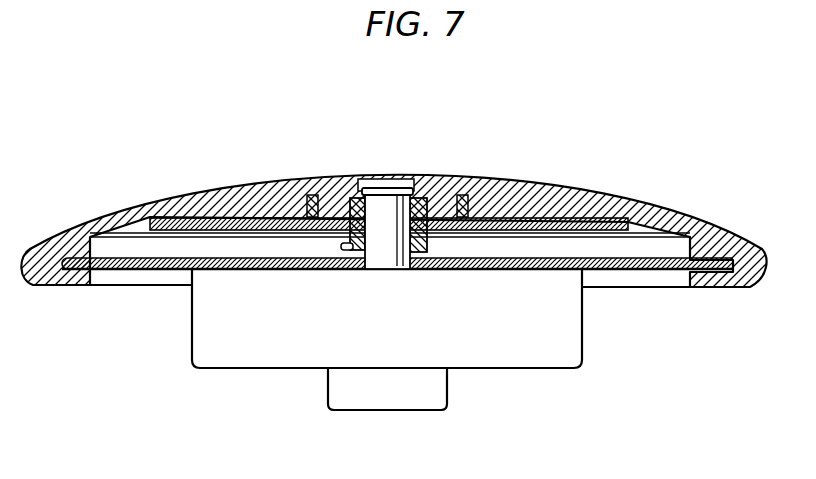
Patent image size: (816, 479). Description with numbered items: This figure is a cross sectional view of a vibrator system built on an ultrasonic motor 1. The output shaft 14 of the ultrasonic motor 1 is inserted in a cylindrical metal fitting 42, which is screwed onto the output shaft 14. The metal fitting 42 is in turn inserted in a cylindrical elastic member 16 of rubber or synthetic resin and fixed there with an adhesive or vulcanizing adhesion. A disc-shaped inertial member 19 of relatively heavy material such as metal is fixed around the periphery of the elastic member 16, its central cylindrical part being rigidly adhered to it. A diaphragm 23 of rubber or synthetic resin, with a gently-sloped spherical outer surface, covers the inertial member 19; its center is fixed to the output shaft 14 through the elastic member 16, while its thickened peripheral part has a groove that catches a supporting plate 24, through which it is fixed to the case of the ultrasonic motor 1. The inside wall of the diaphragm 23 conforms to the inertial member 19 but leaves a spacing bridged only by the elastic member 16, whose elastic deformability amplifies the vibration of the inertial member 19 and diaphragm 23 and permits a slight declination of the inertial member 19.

The ultrasonic motor 1 is at (575, 348).
The output shaft 14 is at (390, 203).
The elastic member 16 is at (447, 200).
The inertial member 19 is at (183, 208).
The diaphragm 23 is at (612, 204).
The supporting plate 24 is at (657, 272).
The metal fitting 42 is at (330, 197).